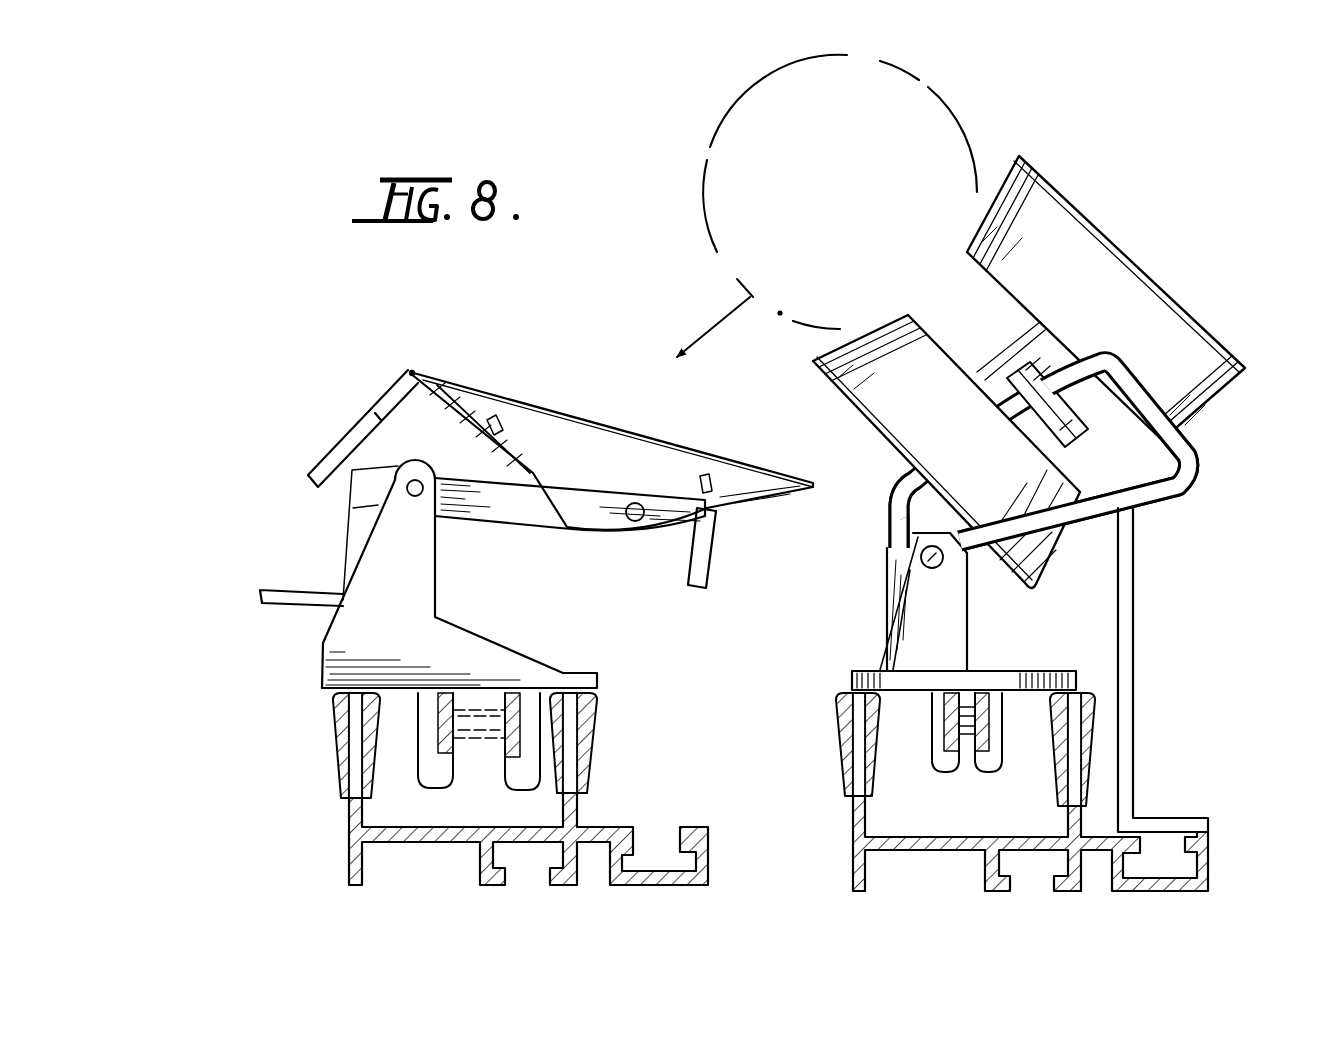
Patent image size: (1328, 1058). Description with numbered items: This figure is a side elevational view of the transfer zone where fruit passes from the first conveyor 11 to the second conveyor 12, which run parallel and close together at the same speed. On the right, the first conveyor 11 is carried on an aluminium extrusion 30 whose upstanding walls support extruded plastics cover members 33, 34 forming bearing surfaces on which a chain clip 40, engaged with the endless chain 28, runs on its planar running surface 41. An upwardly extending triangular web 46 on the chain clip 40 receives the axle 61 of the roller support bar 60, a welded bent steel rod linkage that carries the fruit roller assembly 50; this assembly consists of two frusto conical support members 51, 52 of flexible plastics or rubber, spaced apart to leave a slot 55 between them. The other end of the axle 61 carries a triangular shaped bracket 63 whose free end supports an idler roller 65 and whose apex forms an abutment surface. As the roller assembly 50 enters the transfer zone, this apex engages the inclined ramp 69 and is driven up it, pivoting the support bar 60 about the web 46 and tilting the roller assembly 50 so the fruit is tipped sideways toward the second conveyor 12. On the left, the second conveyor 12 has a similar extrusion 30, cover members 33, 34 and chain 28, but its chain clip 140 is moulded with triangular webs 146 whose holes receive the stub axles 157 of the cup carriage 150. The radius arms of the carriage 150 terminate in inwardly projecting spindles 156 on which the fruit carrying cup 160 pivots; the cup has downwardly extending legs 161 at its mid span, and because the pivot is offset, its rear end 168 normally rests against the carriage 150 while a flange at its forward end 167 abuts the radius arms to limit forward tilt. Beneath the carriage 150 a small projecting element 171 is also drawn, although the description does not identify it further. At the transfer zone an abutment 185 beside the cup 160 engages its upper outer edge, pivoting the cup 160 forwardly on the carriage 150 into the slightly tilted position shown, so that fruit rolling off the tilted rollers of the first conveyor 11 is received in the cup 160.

The first conveyor 11 is at (1184, 814).
The second conveyor 12 is at (333, 805).
The endless chain 28 is at (480, 727).
The aluminium extrusion 30 is at (440, 843).
The cover member 33 is at (337, 733).
The cover member 34 is at (590, 735).
The chain clip 40 is at (1012, 640).
The planar running surface 41 is at (1065, 670).
The upwardly extending web 46 is at (928, 605).
The fruit roller assembly 50 is at (1029, 371).
The frusto conical support member 51 is at (1096, 313).
The frusto conical support member 52 is at (924, 410).
The slot 55 is at (953, 337).
The roller support bar 60 is at (1050, 456).
The axle 61 is at (922, 560).
The triangular shaped bracket 63 is at (886, 520).
The idler roller 65 is at (1006, 420).
The inclined ramp 69 is at (1134, 570).
The chain clip 140 is at (528, 646).
The triangular web 146 is at (393, 587).
The cup carriage 150 is at (535, 530).
The spindle 156 is at (647, 503).
The stub axle 157 is at (413, 502).
The fruit carrying cup 160 is at (594, 400).
The downwardly extending leg 161 is at (712, 555).
The forward end 167 is at (410, 370).
The rear end 168 is at (470, 397).
The lever 171 is at (263, 597).
The abutment 185 is at (330, 447).